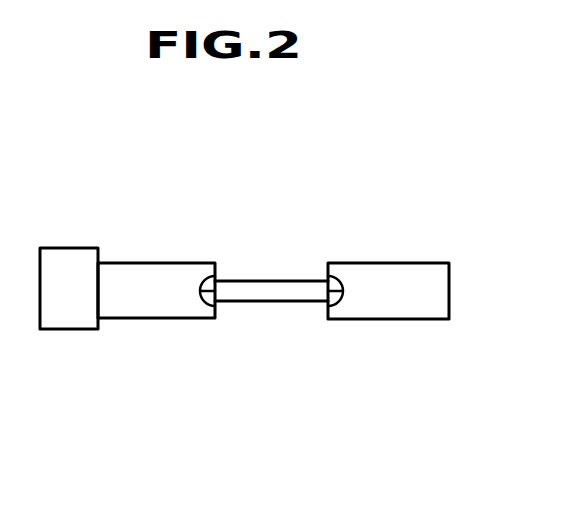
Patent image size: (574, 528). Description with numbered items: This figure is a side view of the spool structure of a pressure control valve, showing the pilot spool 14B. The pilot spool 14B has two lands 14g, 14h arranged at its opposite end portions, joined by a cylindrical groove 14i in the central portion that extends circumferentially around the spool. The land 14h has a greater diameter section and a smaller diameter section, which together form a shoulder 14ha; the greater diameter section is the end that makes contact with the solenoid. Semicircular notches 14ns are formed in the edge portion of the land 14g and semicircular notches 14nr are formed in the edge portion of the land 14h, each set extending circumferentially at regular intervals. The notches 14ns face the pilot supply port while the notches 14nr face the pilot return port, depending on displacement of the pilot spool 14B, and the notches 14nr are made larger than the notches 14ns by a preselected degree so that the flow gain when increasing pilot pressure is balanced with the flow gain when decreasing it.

The pilot spool 14B is at (196, 344).
The shoulder 14ha is at (100, 251).
The land 14h is at (122, 308).
The semicircular notches 14nr is at (234, 282).
The cylindrical groove 14i is at (328, 310).
The semicircular notches 14ns is at (320, 262).
The land 14g is at (415, 310).